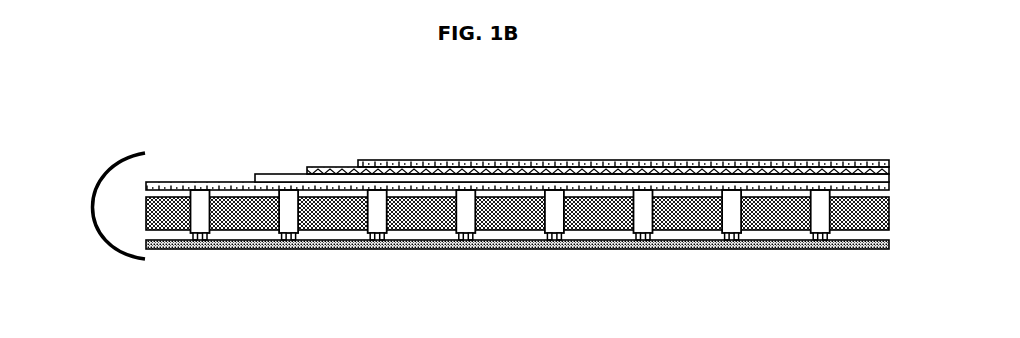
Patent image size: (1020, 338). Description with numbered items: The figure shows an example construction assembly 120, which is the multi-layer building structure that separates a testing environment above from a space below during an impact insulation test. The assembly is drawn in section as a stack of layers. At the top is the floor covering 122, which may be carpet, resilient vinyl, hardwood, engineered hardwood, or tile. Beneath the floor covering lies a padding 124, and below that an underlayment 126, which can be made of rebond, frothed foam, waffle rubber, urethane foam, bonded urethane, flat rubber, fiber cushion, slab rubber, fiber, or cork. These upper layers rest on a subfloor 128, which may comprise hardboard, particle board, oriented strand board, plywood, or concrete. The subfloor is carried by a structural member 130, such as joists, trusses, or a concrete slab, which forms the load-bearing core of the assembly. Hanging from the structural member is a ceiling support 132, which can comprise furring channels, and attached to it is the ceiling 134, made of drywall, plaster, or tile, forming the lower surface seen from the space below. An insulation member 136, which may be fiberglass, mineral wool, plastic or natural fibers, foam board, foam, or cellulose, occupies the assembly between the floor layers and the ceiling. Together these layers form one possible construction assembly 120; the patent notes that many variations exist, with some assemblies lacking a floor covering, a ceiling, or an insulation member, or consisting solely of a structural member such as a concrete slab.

The construction assembly 120 is at (95, 212).
The floor covering 122 is at (370, 160).
The padding 124 is at (322, 167).
The underlayment 126 is at (256, 176).
The subfloor 128 is at (205, 182).
The structural member 130 is at (547, 241).
The ceiling support 132 is at (455, 241).
The ceiling 134 is at (337, 250).
The insulation member 136 is at (245, 231).